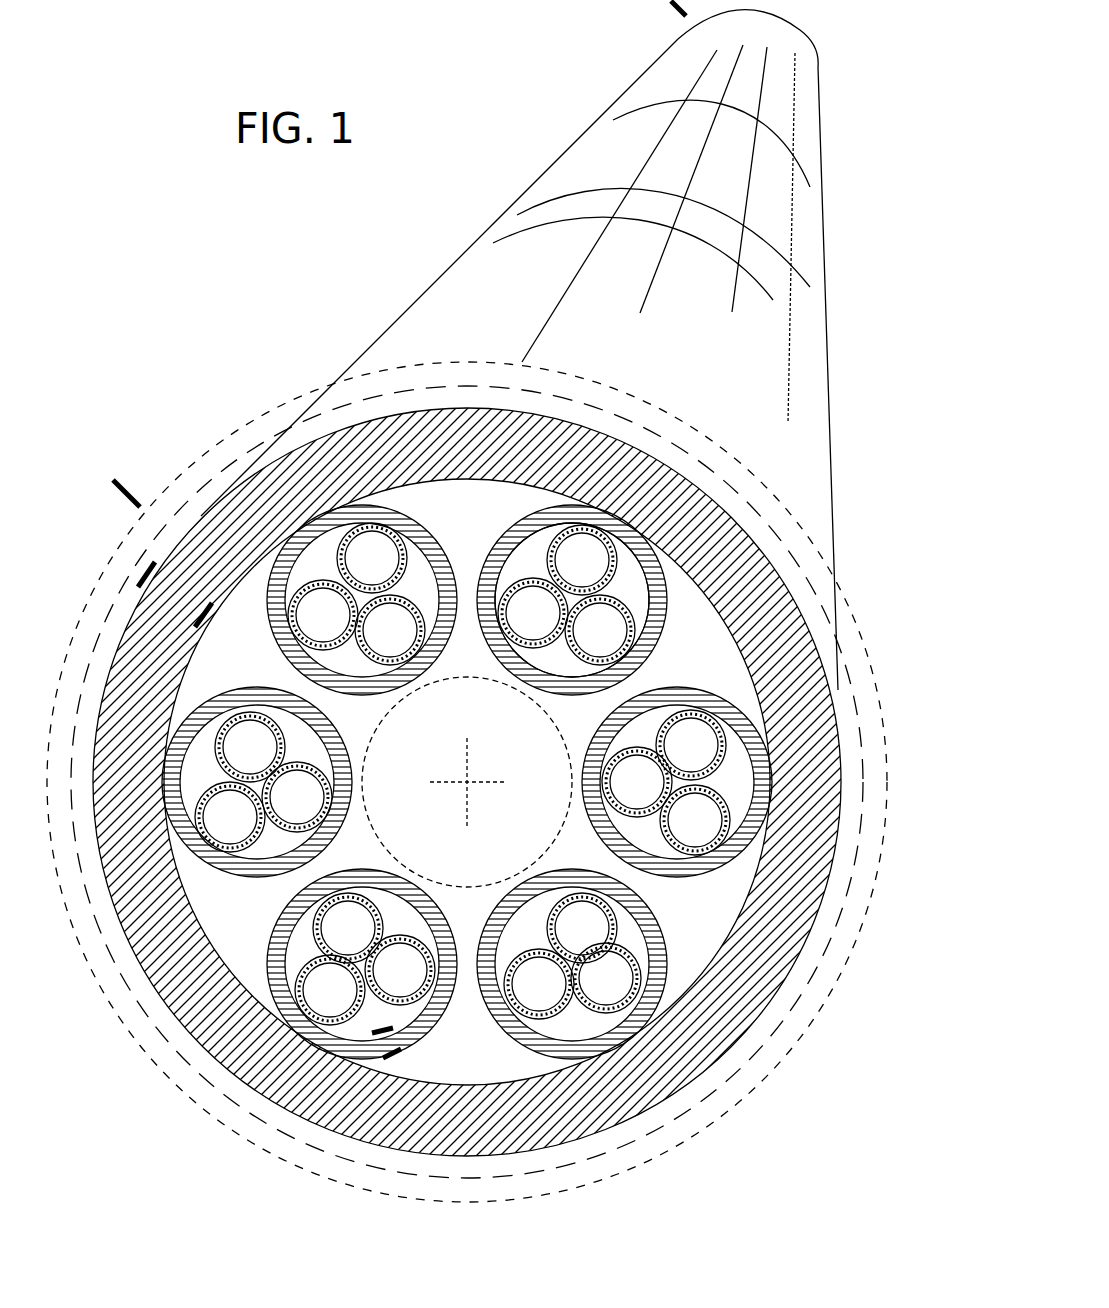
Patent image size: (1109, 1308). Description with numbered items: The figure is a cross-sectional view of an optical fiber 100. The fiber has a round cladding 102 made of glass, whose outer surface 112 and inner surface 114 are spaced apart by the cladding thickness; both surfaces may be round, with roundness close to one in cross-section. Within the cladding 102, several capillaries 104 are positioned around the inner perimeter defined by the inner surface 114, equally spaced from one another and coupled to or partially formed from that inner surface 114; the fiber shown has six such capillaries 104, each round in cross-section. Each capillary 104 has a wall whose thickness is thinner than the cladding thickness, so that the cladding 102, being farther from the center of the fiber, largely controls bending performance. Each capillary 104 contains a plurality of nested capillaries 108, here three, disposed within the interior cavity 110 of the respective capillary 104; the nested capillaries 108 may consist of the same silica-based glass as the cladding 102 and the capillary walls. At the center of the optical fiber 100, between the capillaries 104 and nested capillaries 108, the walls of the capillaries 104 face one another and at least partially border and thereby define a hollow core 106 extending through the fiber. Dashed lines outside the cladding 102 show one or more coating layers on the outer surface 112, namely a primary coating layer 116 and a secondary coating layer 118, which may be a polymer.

The optical fiber 100 is at (889, 446).
The cladding 102 is at (758, 542).
The capillaries 104 is at (400, 517).
The hollow core 106 is at (558, 712).
The nested capillaries 108 is at (405, 546).
The interior cavity 110 is at (632, 580).
The outer surface 112 is at (723, 1057).
The inner surface 114 is at (708, 940).
The primary coating layer 116 is at (887, 790).
The secondary coating layer 118 is at (866, 867).